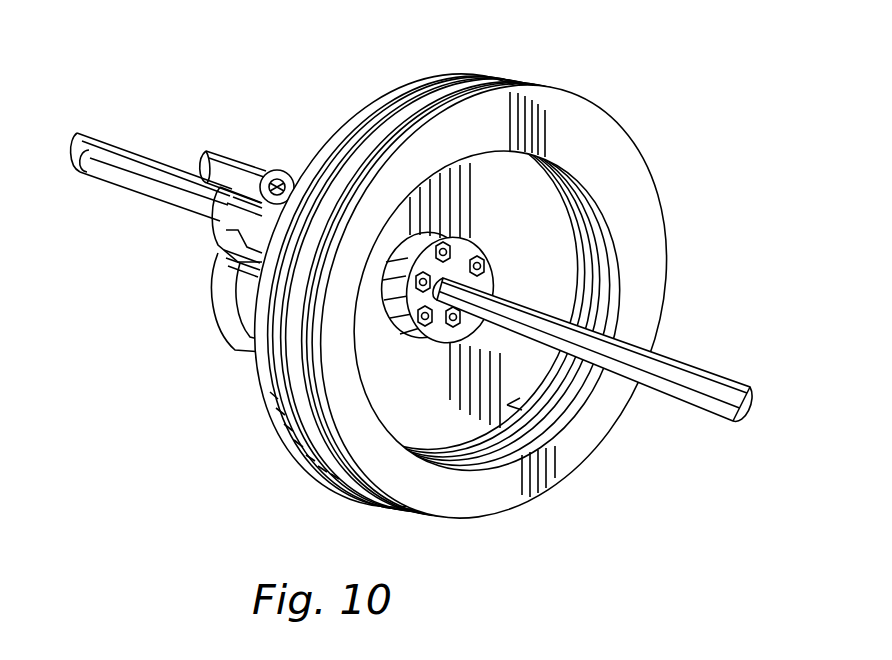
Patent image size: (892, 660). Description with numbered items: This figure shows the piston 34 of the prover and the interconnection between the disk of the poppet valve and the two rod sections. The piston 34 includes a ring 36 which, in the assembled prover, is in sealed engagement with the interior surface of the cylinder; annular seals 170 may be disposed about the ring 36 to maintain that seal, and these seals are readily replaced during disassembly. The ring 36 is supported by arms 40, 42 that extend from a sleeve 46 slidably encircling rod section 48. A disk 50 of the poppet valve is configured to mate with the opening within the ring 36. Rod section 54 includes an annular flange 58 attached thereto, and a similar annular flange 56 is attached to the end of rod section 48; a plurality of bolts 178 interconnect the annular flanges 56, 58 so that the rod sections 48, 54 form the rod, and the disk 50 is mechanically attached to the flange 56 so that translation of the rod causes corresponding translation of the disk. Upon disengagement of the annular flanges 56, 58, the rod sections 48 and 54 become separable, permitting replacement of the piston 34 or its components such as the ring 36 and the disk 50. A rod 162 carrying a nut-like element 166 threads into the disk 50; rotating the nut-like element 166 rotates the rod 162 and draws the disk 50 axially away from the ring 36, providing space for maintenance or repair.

The piston 34 is at (411, 290).
The ring 36 is at (460, 296).
The arm 40 is at (218, 327).
The arm 42 is at (507, 405).
The sleeve 46 is at (223, 231).
The rod section 48 is at (128, 144).
The disk 50 is at (520, 207).
The rod section 54 is at (693, 370).
The annular flange 56 is at (463, 222).
The annular flange 58 is at (470, 236).
The rod 162 is at (217, 153).
The nut-like element 166 is at (277, 183).
The annular seal 170 is at (291, 403).
The bolt 178 is at (481, 268).